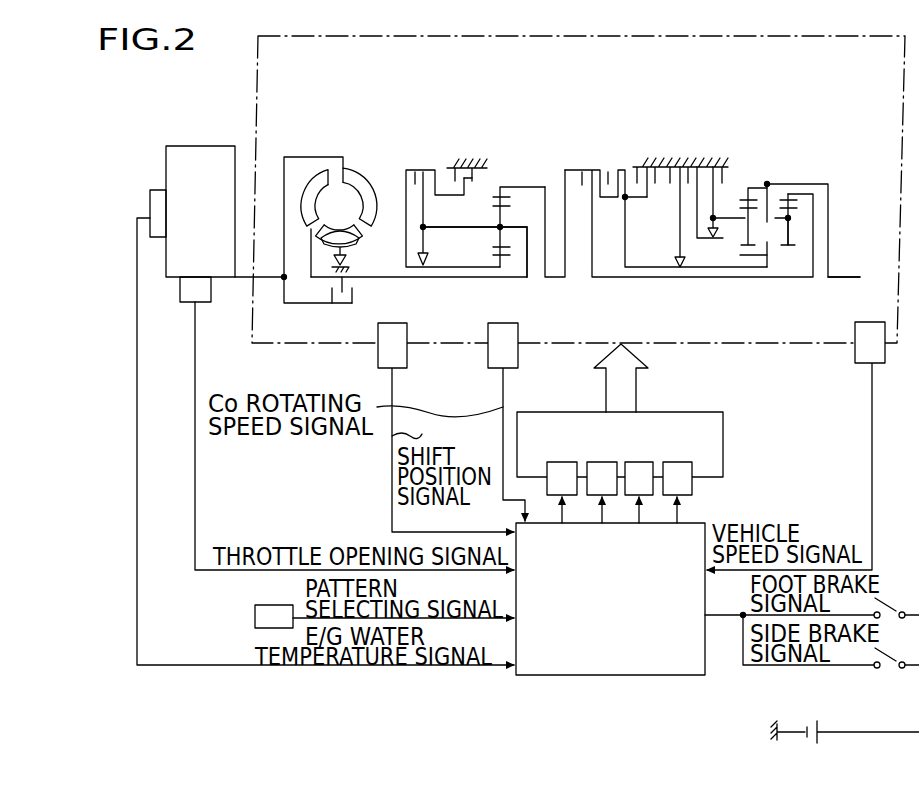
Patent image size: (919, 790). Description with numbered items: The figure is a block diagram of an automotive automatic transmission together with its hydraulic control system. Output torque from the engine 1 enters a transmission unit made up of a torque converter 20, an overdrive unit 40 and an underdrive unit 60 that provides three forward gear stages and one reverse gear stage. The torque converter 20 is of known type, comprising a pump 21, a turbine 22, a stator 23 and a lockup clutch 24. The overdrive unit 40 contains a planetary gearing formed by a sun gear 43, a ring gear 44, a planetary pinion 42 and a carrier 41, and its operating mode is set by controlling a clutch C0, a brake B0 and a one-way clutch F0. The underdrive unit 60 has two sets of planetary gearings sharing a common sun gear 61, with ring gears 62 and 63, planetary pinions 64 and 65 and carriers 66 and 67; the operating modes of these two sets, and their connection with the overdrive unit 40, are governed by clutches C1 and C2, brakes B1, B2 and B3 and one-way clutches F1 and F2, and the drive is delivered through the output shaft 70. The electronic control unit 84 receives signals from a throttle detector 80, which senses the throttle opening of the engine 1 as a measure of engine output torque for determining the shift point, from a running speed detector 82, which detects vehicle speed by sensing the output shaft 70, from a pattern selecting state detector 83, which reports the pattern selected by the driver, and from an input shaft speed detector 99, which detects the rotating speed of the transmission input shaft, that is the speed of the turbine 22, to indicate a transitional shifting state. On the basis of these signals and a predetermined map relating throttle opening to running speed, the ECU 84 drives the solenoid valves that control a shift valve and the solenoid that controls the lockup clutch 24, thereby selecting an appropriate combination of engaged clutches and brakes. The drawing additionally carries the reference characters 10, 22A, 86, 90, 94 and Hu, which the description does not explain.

The engine 1 is at (203, 160).
The input shaft 10 is at (265, 280).
The torque converter 20 is at (328, 148).
The pump 21 is at (357, 181).
The turbine 22 is at (320, 184).
The turbine output shaft 22A is at (391, 278).
The stator 23 is at (353, 236).
The lockup clutch 24 is at (314, 304).
The overdrive unit 40 is at (490, 140).
The carrier 41 is at (518, 226).
The planetary pinion 42 is at (497, 222).
The sun gear 43 is at (497, 257).
The ring gear 44 is at (497, 193).
The underdrive unit 60 is at (684, 133).
The common sun gear 61 is at (776, 256).
The ring gear 62 is at (786, 193).
The ring gear 63 is at (767, 184).
The planetary pinion 64 is at (798, 212).
The planetary pinion 65 is at (768, 225).
The carrier 66 is at (786, 230).
The carrier 67 is at (727, 216).
The output shaft 70 is at (842, 279).
The throttle detector 80 is at (180, 284).
The running speed detector 82 is at (855, 352).
The pattern selecting state detector 83 is at (254, 618).
The electronic control unit (ECU) 84 is at (612, 677).
The hydraulic control circuit 86 is at (723, 445).
The Co rotating speed sensor 90 is at (408, 353).
The engine water temperature sensor 94 is at (158, 197).
The input shaft speed detector 99 is at (519, 353).
The clutch C0 is at (424, 172).
The clutch C1 is at (588, 168).
The clutch C2 is at (618, 168).
The brake B0 is at (487, 170).
The brake B1 is at (661, 158).
The brake B2 is at (694, 160).
The brake B3 is at (731, 164).
The one-way clutch F0 is at (432, 262).
The one-way clutch F1 is at (672, 260).
The one-way clutch F2 is at (730, 238).
The housing Hu is at (467, 160).